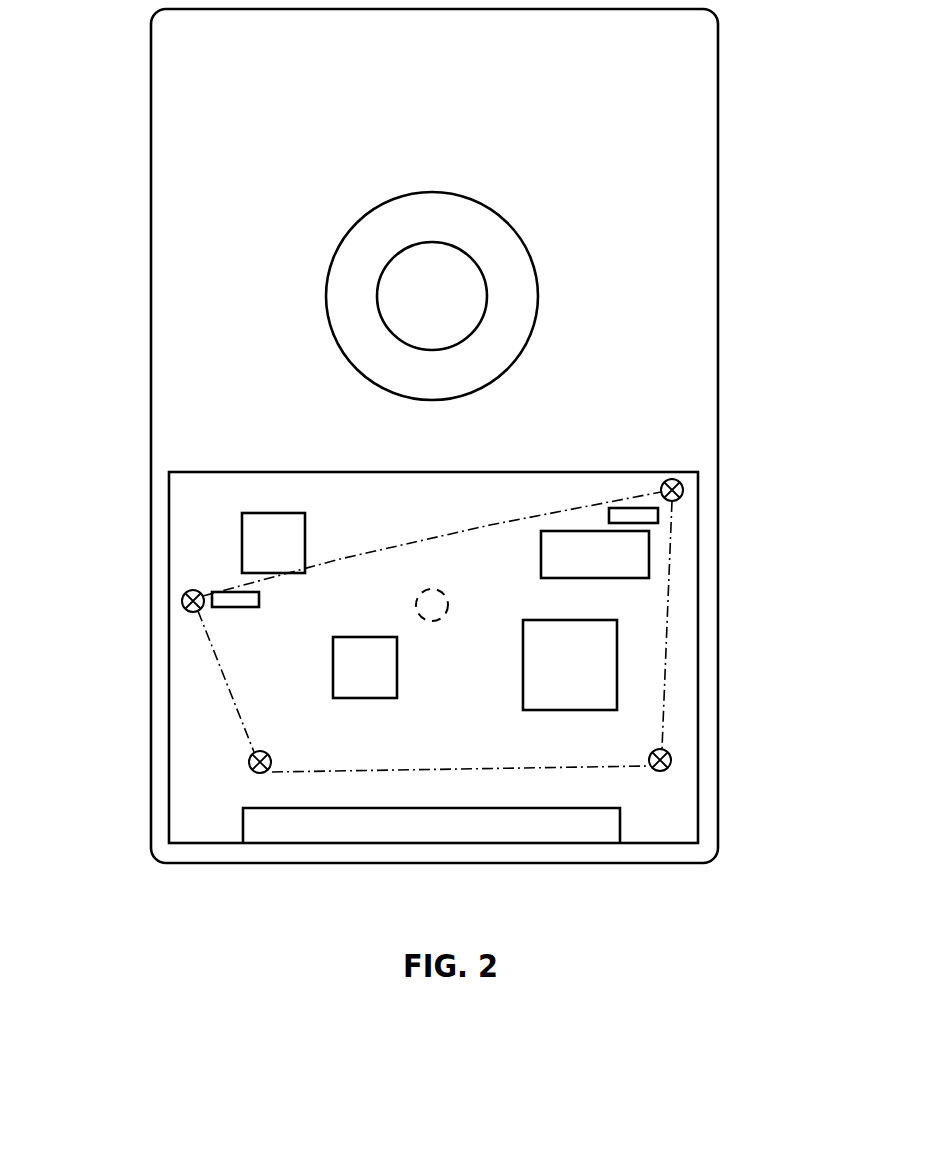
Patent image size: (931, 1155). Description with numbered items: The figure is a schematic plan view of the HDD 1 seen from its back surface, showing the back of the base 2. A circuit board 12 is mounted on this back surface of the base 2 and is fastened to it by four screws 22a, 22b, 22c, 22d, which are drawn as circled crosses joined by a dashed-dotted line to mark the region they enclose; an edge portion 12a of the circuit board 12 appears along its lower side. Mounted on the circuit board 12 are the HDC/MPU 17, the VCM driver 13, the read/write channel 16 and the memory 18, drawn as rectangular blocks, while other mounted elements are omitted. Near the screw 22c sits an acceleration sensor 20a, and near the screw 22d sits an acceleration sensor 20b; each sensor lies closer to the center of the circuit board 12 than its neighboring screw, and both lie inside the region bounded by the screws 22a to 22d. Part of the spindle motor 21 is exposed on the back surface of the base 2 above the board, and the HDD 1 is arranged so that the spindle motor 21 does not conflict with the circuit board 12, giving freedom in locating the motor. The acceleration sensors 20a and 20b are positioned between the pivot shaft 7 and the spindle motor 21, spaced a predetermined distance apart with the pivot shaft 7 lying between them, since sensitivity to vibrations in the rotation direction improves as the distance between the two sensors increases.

The HDD 1 is at (108, 97).
The base 2 is at (719, 228).
The spindle motor 21 is at (513, 226).
The circuit board 12 is at (540, 472).
The notch of circuit board 12a is at (440, 808).
The screw 22a is at (272, 758).
The screw 22b is at (671, 758).
The screw 22c is at (182, 600).
The screw 22d is at (683, 488).
The acceleration sensor 20a is at (240, 607).
The acceleration sensor 20b is at (612, 508).
The VCM driver 13 is at (305, 545).
The read/write channel 16 is at (333, 665).
The HDC/MPU 17 is at (523, 675).
The memory 18 is at (541, 545).
The pivot shaft 7 is at (416, 602).